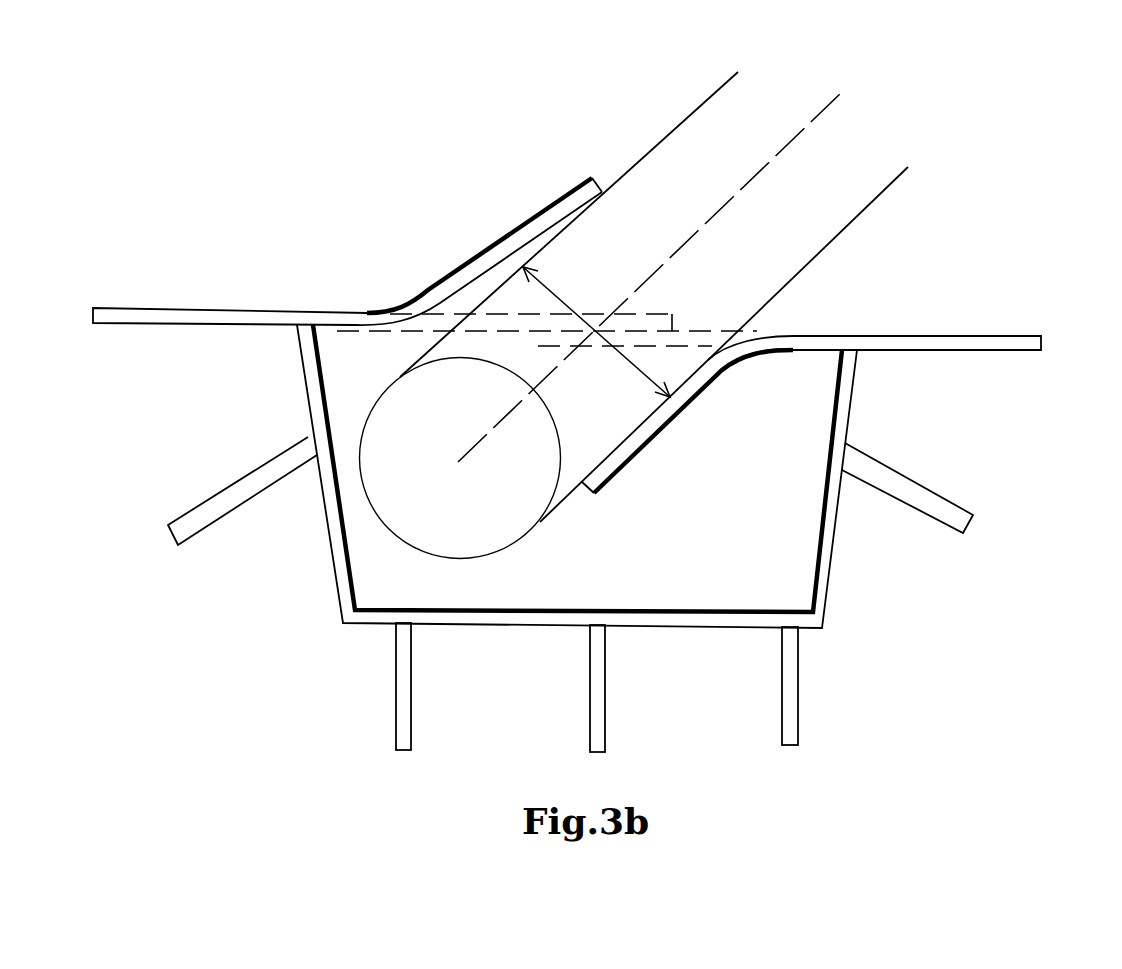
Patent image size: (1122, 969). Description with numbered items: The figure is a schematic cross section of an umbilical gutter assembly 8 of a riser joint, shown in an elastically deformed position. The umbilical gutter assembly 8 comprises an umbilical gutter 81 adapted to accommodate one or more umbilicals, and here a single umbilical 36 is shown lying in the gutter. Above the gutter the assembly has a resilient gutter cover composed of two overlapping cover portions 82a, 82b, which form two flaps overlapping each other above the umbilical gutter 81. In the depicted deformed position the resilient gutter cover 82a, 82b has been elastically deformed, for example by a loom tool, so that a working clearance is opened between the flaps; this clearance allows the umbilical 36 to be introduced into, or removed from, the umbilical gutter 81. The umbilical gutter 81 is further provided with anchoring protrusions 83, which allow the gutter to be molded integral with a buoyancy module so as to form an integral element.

The umbilical gutter assembly 8 is at (992, 447).
The umbilical 36 is at (634, 315).
The umbilical gutter 81 is at (843, 396).
The cover portion 82a is at (950, 340).
The cover portion 82b is at (224, 319).
The anchoring protrusion 83 is at (943, 510).